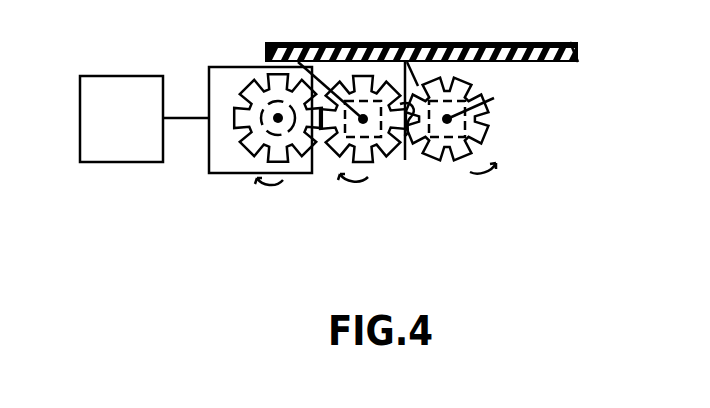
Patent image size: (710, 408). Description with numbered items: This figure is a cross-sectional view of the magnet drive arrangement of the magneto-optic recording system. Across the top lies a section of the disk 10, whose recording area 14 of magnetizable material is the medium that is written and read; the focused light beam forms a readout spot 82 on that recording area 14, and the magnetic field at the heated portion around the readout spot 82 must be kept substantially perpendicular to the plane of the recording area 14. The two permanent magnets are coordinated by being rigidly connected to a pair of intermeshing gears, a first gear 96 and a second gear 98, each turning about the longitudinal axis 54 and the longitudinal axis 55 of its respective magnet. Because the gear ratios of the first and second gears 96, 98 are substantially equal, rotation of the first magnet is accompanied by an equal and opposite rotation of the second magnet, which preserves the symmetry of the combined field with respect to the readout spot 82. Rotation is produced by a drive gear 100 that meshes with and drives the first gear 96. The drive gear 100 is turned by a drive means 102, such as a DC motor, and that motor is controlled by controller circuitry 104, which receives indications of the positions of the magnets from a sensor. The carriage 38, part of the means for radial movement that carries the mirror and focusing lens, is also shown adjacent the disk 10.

The disk 10 is at (579, 60).
The recording area 14 is at (570, 42).
The readout spot 82 is at (430, 43).
The longitudinal axis 54 is at (263, 52).
The longitudinal axis 55 is at (488, 100).
The carriage 38 is at (405, 160).
The first gear 96 is at (352, 140).
The second gear 98 is at (490, 133).
The drive gear 100 is at (262, 155).
The drive means 102 is at (235, 163).
The controller circuitry 104 is at (117, 163).